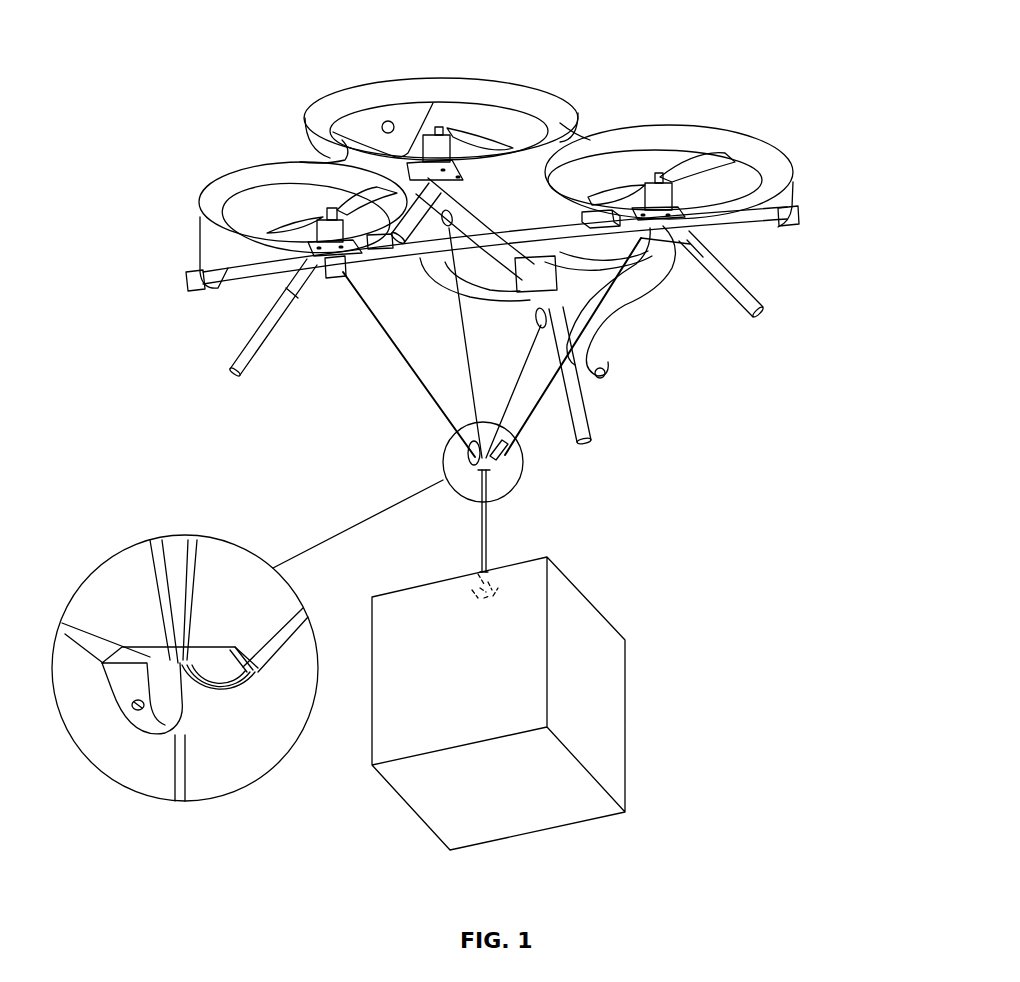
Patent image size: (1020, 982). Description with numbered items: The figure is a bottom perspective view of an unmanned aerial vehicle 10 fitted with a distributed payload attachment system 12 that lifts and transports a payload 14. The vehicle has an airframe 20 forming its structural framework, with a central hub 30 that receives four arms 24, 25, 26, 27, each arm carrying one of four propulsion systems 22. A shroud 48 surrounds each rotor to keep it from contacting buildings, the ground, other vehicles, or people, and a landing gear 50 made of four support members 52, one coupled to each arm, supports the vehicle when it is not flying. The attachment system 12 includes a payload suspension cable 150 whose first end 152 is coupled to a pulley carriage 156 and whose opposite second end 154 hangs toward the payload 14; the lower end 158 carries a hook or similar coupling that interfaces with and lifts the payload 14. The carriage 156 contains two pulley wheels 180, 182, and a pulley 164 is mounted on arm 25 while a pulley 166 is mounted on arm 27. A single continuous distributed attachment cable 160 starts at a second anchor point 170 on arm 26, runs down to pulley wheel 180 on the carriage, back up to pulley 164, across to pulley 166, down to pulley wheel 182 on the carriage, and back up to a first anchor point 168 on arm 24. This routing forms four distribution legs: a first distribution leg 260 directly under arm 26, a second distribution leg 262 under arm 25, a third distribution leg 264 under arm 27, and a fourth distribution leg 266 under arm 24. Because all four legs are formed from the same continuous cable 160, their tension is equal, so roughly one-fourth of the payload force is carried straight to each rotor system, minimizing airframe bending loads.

The unmanned aerial vehicle 10 is at (737, 108).
The distributed payload attachment system 12 is at (330, 441).
The payload 14 is at (622, 690).
The airframe 20 is at (316, 294).
The propulsion system 22 is at (452, 110).
The arm 24 is at (802, 216).
The arm 25 is at (391, 121).
The arm 26 is at (184, 283).
The arm 27 is at (606, 375).
The hub 30 is at (503, 247).
The shroud 48 is at (491, 97).
The landing gear 50 is at (239, 373).
The support member 52 is at (410, 195).
The payload suspension cable 150 is at (487, 487).
The first end 152 is at (472, 500).
The second end 154 is at (493, 570).
The pulley carriage 156 is at (462, 467).
The second end 158 is at (462, 577).
The distributed attachment cable 160 is at (413, 382).
The pulley 164 is at (445, 226).
The pulley 166 is at (537, 325).
The first anchor point 168 is at (692, 247).
The second anchor point 170 is at (340, 268).
The pulley wheel 180 is at (235, 720).
The pulley wheel 182 is at (160, 735).
The first distribution leg 260 is at (437, 412).
The second distribution leg 262 is at (458, 333).
The third distribution leg 264 is at (522, 447).
The fourth distribution leg 266 is at (560, 437).